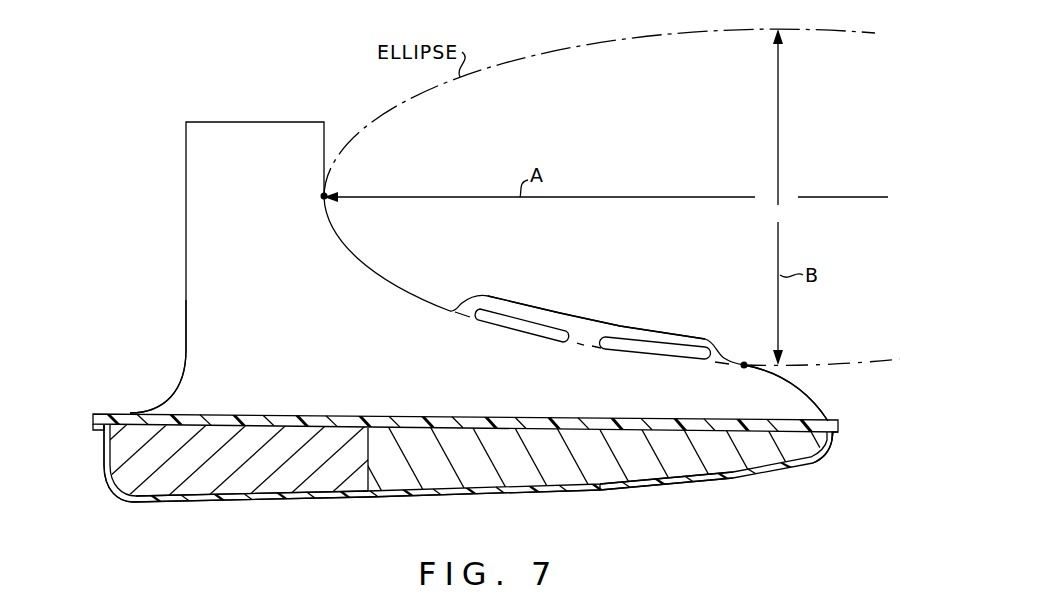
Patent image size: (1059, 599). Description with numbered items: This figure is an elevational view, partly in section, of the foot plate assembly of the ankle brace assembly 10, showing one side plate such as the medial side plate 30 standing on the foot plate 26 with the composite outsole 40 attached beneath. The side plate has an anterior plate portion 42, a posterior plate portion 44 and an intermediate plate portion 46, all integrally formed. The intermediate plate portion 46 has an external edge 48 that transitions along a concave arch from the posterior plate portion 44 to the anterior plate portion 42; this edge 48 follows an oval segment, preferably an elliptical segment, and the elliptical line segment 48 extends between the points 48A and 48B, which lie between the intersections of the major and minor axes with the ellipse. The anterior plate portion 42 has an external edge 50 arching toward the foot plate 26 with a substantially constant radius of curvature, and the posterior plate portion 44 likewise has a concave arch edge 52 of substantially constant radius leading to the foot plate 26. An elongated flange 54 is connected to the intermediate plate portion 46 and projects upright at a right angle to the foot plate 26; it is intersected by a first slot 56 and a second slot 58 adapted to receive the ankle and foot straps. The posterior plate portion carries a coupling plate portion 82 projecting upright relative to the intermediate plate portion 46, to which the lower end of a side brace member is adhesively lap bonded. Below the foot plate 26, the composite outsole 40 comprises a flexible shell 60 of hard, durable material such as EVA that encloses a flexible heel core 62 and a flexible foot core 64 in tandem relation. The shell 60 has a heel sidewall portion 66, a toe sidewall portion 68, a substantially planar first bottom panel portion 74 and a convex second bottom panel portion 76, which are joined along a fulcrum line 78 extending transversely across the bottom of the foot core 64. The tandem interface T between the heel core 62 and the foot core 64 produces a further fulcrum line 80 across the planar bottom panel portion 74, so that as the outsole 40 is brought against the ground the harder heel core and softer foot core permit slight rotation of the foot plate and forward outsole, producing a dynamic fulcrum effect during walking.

The ankle brace assembly 10 is at (133, 127).
The foot plate 26 is at (846, 425).
The medial side plate 30 is at (158, 255).
The composite outsole 40 is at (128, 501).
The anterior plate portion 42 is at (776, 404).
The posterior plate portion 44 is at (212, 323).
The intermediate plate portion 46 is at (428, 375).
The external edge 48 is at (415, 290).
The end point of elliptical line segment 48A is at (322, 198).
The end point of elliptical line segment 48B is at (742, 367).
The external edge of anterior plate portion 50 is at (812, 394).
The external edge of posterior plate portion 52 is at (175, 393).
The elongated flange 54 is at (598, 326).
The first slot 56 is at (519, 325).
The second slot 58 is at (684, 350).
The flexible shell 60 is at (490, 498).
The flexible heel core 62 is at (210, 480).
The flexible foot core 64 is at (672, 465).
The heel sidewall portion 66 is at (104, 465).
The toe sidewall portion 68 is at (833, 450).
The first bottom panel portion 74 is at (238, 492).
The second bottom panel portion 76 is at (729, 482).
The fulcrum line 78 is at (585, 493).
The fulcrum line 80 is at (364, 503).
The coupling plate portion 82 is at (205, 165).
The tandem interface T is at (368, 449).